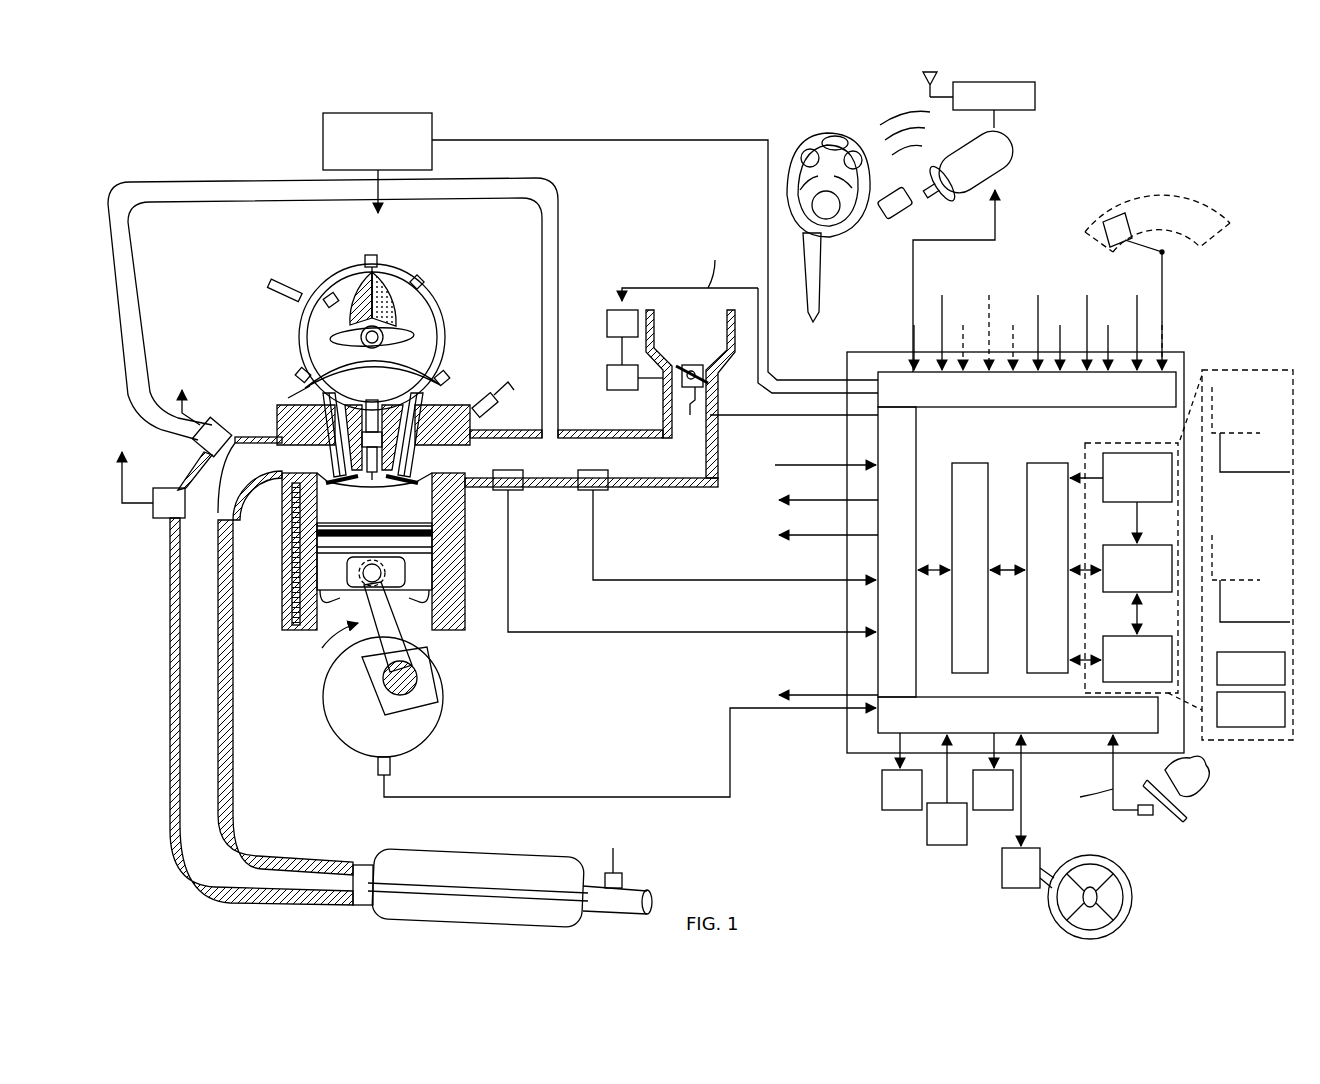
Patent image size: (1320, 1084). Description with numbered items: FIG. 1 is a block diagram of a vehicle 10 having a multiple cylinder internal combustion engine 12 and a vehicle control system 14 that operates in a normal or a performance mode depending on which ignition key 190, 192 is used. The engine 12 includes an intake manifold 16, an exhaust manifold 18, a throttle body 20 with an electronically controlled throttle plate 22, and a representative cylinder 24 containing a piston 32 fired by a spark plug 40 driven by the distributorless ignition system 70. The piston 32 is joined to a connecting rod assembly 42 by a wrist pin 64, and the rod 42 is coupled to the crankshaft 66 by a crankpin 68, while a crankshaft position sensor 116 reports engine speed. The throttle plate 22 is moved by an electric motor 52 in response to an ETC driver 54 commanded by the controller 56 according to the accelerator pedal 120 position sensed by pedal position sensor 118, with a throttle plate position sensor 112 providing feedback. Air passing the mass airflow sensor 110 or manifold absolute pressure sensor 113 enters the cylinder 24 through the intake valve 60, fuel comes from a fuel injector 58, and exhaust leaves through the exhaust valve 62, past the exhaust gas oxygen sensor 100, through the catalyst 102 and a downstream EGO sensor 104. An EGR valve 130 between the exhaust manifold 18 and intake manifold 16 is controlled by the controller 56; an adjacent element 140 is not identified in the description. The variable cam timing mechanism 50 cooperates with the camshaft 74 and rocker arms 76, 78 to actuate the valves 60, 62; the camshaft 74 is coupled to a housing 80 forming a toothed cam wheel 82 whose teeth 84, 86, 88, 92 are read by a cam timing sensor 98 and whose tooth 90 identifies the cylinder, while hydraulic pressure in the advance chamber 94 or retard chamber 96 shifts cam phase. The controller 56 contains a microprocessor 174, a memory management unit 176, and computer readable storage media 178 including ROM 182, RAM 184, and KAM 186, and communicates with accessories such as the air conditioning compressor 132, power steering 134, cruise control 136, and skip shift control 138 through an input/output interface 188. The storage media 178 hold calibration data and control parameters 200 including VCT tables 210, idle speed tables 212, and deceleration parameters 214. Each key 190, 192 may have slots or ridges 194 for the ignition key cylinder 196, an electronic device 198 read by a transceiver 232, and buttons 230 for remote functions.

The vehicle 10 is at (704, 130).
The internal combustion engine 12 is at (508, 678).
The vehicle control system 14 is at (1148, 168).
The intake manifold 16 is at (665, 469).
The exhaust manifold 18 is at (227, 498).
The throttle body 20 is at (727, 338).
The throttle plate 22 is at (712, 372).
The cylinder 24 is at (357, 510).
The piston 32 is at (450, 545).
The spark plug 40 is at (375, 486).
The connecting rod assembly 42 is at (418, 640).
The variable cam timing mechanism 50 is at (458, 320).
The electric motor 52 is at (607, 365).
The ETC driver 54 is at (618, 297).
The controller 56 is at (1185, 366).
The fuel injector 58 is at (494, 397).
The intake valve 60 is at (424, 468).
The exhaust valve 62 is at (326, 468).
The wrist pin 64 is at (372, 614).
The crankshaft 66 is at (323, 712).
The crankpin 68 is at (424, 690).
The distributorless ignition system 70 is at (432, 125).
The camshaft 74 is at (420, 338).
The rocker arm 76 is at (440, 378).
The rocker arm 78 is at (300, 392).
The housing 80 is at (298, 345).
The toothed cam wheel 82 is at (378, 262).
The tooth 84 is at (440, 296).
The tooth 86 is at (446, 390).
The tooth 88 is at (298, 378).
The tooth 90 is at (302, 312).
The tooth 92 is at (368, 258).
The advance chamber 94 is at (412, 292).
The retard chamber 96 is at (354, 282).
The cam timing sensor 98 is at (270, 298).
The exhaust gas oxygen sensor 100 is at (158, 520).
The catalyst 102 is at (485, 852).
The EGO sensor 104 is at (622, 878).
The mass airflow sensor 110 is at (510, 492).
The throttle plate position sensor 112 is at (695, 408).
The manifold absolute pressure sensor 113 is at (593, 492).
The crankshaft position sensor 116 is at (378, 766).
The pedal position sensor 118 is at (1138, 812).
The accelerator pedal 120 is at (1172, 818).
The EGR valve 130 is at (176, 340).
The air conditioning compressor 132 is at (882, 790).
The power steering 134 is at (1002, 872).
The cruise control 136 is at (927, 825).
The manual transmission skip shift control 138 is at (993, 812).
The EGR passage 140 is at (196, 180).
The microprocessor 174 is at (972, 463).
The memory management unit 176 is at (1049, 463).
The computer readable storage media 178 is at (1170, 697).
The read-only memory 182 is at (1147, 453).
The random-access memory 184 is at (1140, 636).
The keep-alive memory 186 is at (1140, 545).
The input/output interface 188 is at (888, 672).
The ignition key 190 is at (843, 275).
The ignition key 192 is at (882, 252).
The slots, ridges, dimples 194 is at (803, 298).
The ignition key cylinder 196 is at (1020, 160).
The electronic component 198 is at (890, 200).
The calibration data and control parameters 200 is at (1240, 368).
The VCT calibration tables 210 is at (1250, 386).
The idle speed calibration tables 212 is at (1240, 535).
The engine braking or deceleration parameters 214 is at (1262, 744).
The buttons 230 is at (792, 140).
The transceiver 232 is at (1035, 96).